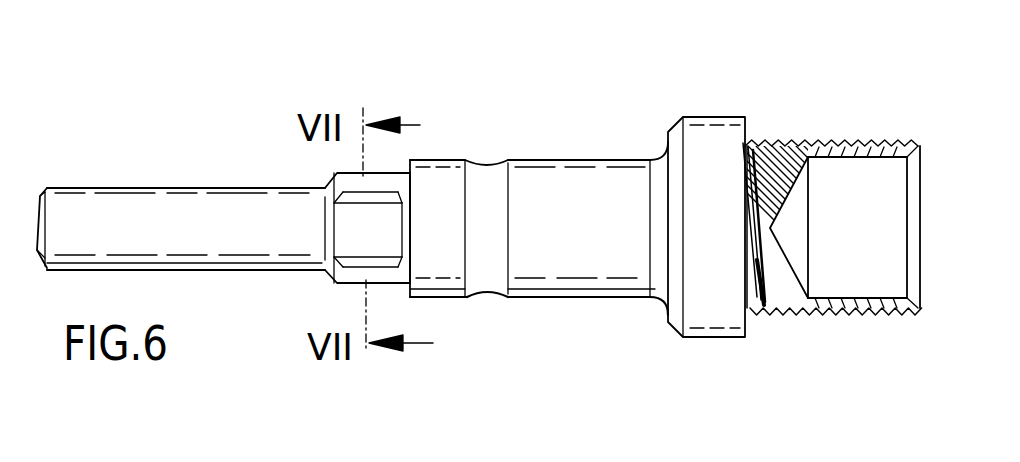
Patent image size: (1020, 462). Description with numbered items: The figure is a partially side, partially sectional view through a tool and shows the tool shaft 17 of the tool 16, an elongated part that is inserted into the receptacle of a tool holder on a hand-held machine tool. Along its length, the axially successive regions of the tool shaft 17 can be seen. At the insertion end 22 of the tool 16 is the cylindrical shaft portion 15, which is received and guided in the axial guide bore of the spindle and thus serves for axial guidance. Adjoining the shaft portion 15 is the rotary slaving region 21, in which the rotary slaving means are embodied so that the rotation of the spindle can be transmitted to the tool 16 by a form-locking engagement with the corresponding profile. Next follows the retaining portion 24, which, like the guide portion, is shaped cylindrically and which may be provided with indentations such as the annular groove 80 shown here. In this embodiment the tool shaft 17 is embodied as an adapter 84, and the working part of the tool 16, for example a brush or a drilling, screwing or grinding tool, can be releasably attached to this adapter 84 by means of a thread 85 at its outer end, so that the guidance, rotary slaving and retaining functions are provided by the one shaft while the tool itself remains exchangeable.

The shaft portion 15 is at (230, 247).
The tool 16 is at (128, 124).
The tool shaft 17 is at (708, 127).
The rotary slaving region 21 is at (347, 287).
The insertion end 22 is at (35, 207).
The retaining portion 24 is at (623, 267).
The annular groove 80 is at (487, 187).
The adapter 84 is at (864, 122).
The thread 85 is at (857, 313).